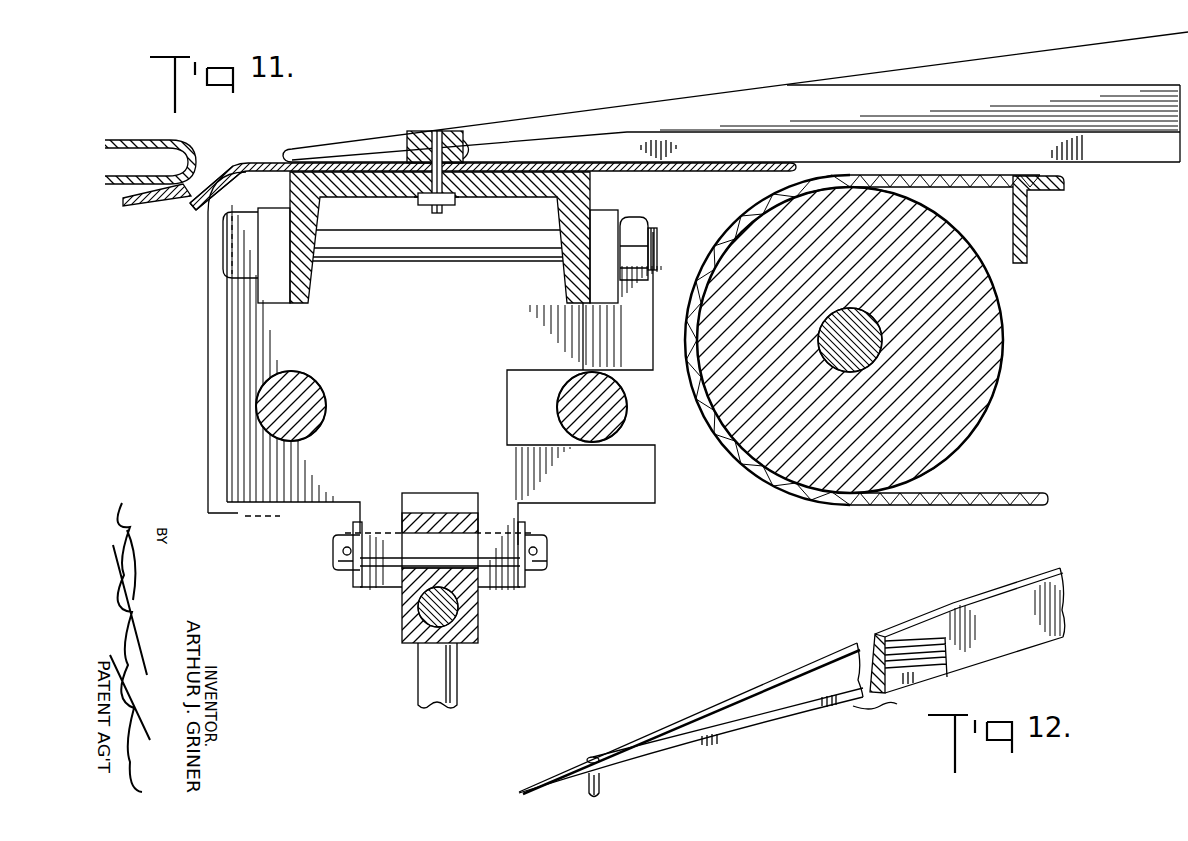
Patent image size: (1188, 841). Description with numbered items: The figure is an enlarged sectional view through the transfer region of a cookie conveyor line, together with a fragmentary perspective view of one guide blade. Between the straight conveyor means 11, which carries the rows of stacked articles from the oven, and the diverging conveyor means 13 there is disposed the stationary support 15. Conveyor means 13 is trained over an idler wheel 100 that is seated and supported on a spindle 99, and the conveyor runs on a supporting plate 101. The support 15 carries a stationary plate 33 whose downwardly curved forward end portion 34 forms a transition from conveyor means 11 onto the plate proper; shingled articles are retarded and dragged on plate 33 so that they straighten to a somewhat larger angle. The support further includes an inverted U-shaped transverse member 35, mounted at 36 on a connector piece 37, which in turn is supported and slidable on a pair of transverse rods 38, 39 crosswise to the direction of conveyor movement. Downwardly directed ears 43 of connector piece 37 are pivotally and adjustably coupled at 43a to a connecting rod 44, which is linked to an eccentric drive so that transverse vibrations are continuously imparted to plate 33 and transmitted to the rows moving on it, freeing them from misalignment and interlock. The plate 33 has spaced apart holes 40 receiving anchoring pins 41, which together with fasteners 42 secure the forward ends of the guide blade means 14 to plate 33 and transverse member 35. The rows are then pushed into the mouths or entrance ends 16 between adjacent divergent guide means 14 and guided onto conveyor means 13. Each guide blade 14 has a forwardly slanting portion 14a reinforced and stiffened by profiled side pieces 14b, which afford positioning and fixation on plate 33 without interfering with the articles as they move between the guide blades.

In FIG. 11, the straight conveyor means 11 is at (137, 140).
In FIG. 11, the diverging conveyor means 13 is at (955, 188).
In FIG. 11, the guide blade means 14 is at (905, 47).
In FIG. 12, the guide blade means 14 is at (1022, 562).
In FIG. 11, the forwardly slanting portion 14a is at (642, 105).
In FIG. 12, the forwardly slanting portion 14a is at (828, 658).
In FIG. 11, the profiled side pieces 14b is at (1142, 148).
In FIG. 12, the profiled side pieces 14b is at (872, 635).
In FIG. 11, the stationary support 15 is at (192, 229).
In FIG. 11, the entrance ends 16 is at (322, 165).
In FIG. 11, the stationary plate 33 is at (655, 170).
In FIG. 11, the downwardly curved forward end portion 34 is at (205, 165).
In FIG. 11, the inverted U-shaped transverse member 35 is at (578, 196).
In FIG. 11, the mounting 36 is at (640, 240).
In FIG. 11, the connector piece 37 is at (655, 302).
In FIG. 11, the transverse rod 38 is at (305, 395).
In FIG. 11, the transverse rod 39 is at (562, 403).
In FIG. 11, the holes 40 is at (462, 149).
In FIG. 11, the anchoring pins 41 is at (437, 131).
In FIG. 12, the anchoring pins 41 is at (600, 780).
In FIG. 11, the fasteners 42 is at (450, 203).
In FIG. 11, the downwardly directed ears 43 is at (362, 510).
In FIG. 11, the pivotal coupling 43a is at (551, 550).
In FIG. 11, the connecting rod 44 is at (452, 676).
In FIG. 11, the spindle 99 is at (868, 344).
In FIG. 11, the idler wheel 100 is at (985, 375).
In FIG. 11, the plate 101 is at (1035, 195).